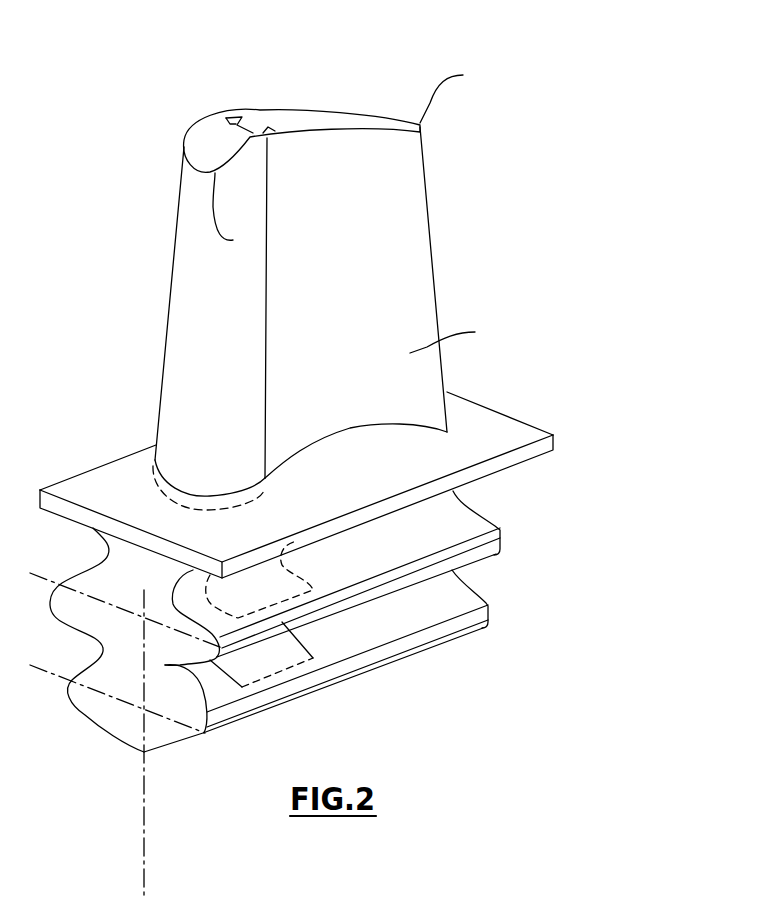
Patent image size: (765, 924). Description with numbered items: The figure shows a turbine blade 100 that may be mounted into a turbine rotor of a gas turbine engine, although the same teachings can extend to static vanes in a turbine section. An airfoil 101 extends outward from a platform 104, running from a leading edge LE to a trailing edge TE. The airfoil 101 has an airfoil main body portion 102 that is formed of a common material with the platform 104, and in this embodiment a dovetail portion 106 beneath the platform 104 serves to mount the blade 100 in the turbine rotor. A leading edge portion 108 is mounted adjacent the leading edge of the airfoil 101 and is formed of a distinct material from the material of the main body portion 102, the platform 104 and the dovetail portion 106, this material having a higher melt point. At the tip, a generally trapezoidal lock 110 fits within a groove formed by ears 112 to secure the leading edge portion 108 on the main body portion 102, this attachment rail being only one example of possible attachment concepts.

The turbine blade 100 is at (588, 278).
The airfoil 101 is at (370, 98).
The airfoil main body portion 102 is at (400, 213).
The platform 104 is at (483, 440).
The dovetail portion 106 is at (462, 533).
The leading edge portion 108 is at (195, 193).
The lock 110 is at (247, 127).
The ears 112 is at (231, 117).